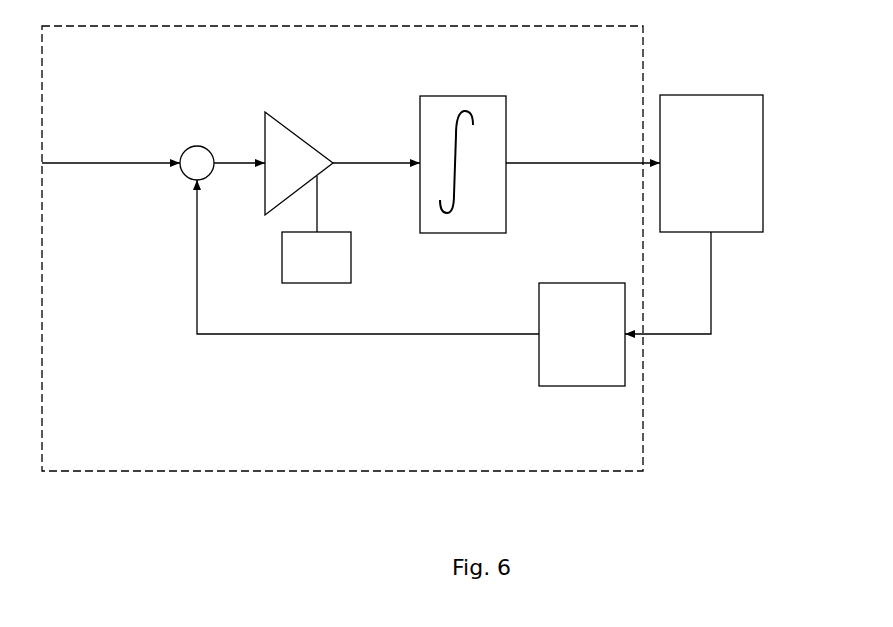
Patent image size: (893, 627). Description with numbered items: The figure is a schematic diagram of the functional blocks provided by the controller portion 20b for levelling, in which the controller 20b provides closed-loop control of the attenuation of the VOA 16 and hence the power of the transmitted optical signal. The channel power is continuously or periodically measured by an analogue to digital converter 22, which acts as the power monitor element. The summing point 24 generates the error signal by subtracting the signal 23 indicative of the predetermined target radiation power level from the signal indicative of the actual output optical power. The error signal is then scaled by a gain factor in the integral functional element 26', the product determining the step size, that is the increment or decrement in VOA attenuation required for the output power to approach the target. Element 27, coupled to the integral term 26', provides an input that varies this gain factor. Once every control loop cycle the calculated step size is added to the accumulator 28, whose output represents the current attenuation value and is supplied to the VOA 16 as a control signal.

The controller portion 20b is at (143, 472).
The signal indicative of the predetermined target radiation power level 23 is at (111, 151).
The summing point 24 is at (197, 128).
The integral functional element 26' is at (305, 148).
The gain factor input element 27 is at (316, 229).
The accumulator 28 is at (488, 96).
The VOA 16 is at (711, 163).
The analogue to digital converter 22 is at (539, 370).